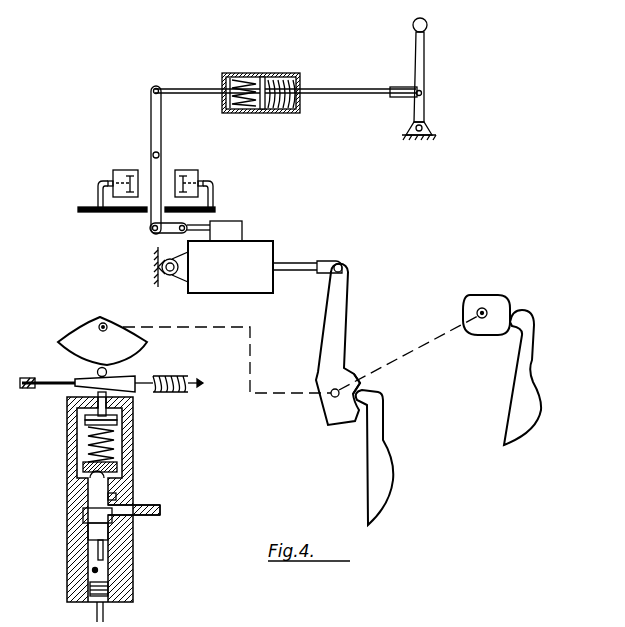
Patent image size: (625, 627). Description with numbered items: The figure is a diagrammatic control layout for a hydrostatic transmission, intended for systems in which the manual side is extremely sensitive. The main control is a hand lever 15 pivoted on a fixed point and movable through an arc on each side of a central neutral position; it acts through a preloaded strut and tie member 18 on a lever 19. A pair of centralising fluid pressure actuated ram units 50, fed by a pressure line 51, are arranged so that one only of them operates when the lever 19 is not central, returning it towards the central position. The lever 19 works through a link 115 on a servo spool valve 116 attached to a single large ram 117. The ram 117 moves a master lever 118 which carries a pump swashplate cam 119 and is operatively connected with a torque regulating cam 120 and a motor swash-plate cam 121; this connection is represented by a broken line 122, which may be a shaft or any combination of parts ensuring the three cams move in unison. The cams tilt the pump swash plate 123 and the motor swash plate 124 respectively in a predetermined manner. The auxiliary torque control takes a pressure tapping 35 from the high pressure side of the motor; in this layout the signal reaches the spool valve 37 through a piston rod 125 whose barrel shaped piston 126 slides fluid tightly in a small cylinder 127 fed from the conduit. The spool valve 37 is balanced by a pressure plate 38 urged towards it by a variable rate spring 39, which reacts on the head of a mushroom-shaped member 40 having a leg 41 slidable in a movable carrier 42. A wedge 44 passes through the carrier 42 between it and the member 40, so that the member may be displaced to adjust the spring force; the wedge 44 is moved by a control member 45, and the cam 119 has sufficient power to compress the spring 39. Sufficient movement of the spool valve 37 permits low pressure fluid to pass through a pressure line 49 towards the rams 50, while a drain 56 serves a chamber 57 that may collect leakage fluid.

The hand lever 15 is at (415, 55).
The preloaded strut and tie member 18 is at (252, 73).
The lever 19 is at (161, 121).
The fluid pressure actuated ram units 50 is at (125, 170).
The pressure line 51 is at (95, 212).
The link 115 is at (190, 226).
The servo spool valve 116 is at (234, 232).
The ram 117 is at (273, 241).
The master lever 118 is at (332, 334).
The pump swashplate cam 119 is at (355, 376).
The torque regulating cam 120 is at (117, 338).
The motor swash-plate cam 121 is at (488, 300).
The broken line 122 is at (253, 381).
The pump swash plate 123 is at (378, 468).
The motor swash plate 124 is at (520, 407).
The wedge 44 is at (138, 377).
The control member 45 is at (52, 381).
The movable carrier 42 is at (85, 400).
The leg 41 is at (86, 418).
The mushroom-shaped member 40 is at (96, 442).
The variable rate spring 39 is at (98, 458).
The chamber 57 is at (92, 483).
The drain 56 is at (114, 498).
The pressure line 49 is at (120, 520).
The pressure plate 38 is at (97, 522).
The spool valve 37 is at (100, 533).
The piston rod 125 is at (108, 553).
The barrel shaped piston 126 is at (92, 570).
The small cylinder 127 is at (92, 580).
The pressure tapping 35 is at (97, 608).